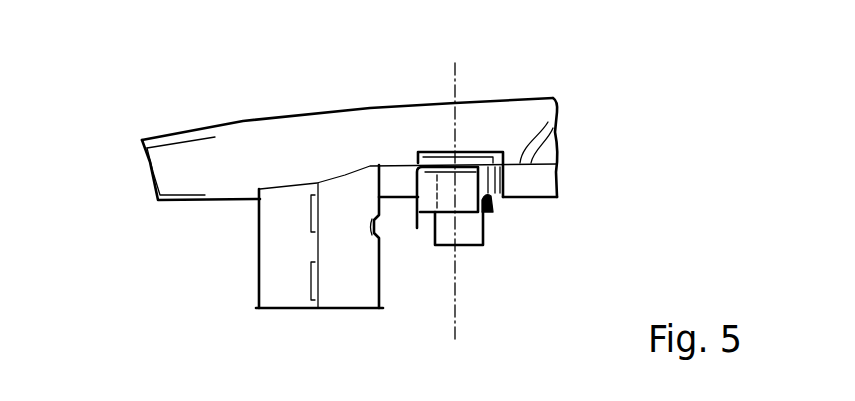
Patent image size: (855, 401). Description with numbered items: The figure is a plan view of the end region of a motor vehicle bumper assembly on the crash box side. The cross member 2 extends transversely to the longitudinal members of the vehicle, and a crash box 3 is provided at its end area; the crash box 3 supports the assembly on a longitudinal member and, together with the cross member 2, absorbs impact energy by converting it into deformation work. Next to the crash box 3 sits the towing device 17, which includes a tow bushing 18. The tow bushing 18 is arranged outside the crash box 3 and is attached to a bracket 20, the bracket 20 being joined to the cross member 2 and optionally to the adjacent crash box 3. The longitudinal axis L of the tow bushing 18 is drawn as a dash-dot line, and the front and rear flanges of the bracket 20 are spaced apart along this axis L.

The cross member 2 is at (527, 107).
The crash box 3 is at (270, 277).
The towing device 17 is at (548, 233).
The tow bushing 18 is at (443, 246).
The bracket 20 is at (526, 210).
The longitudinal axis L is at (455, 75).